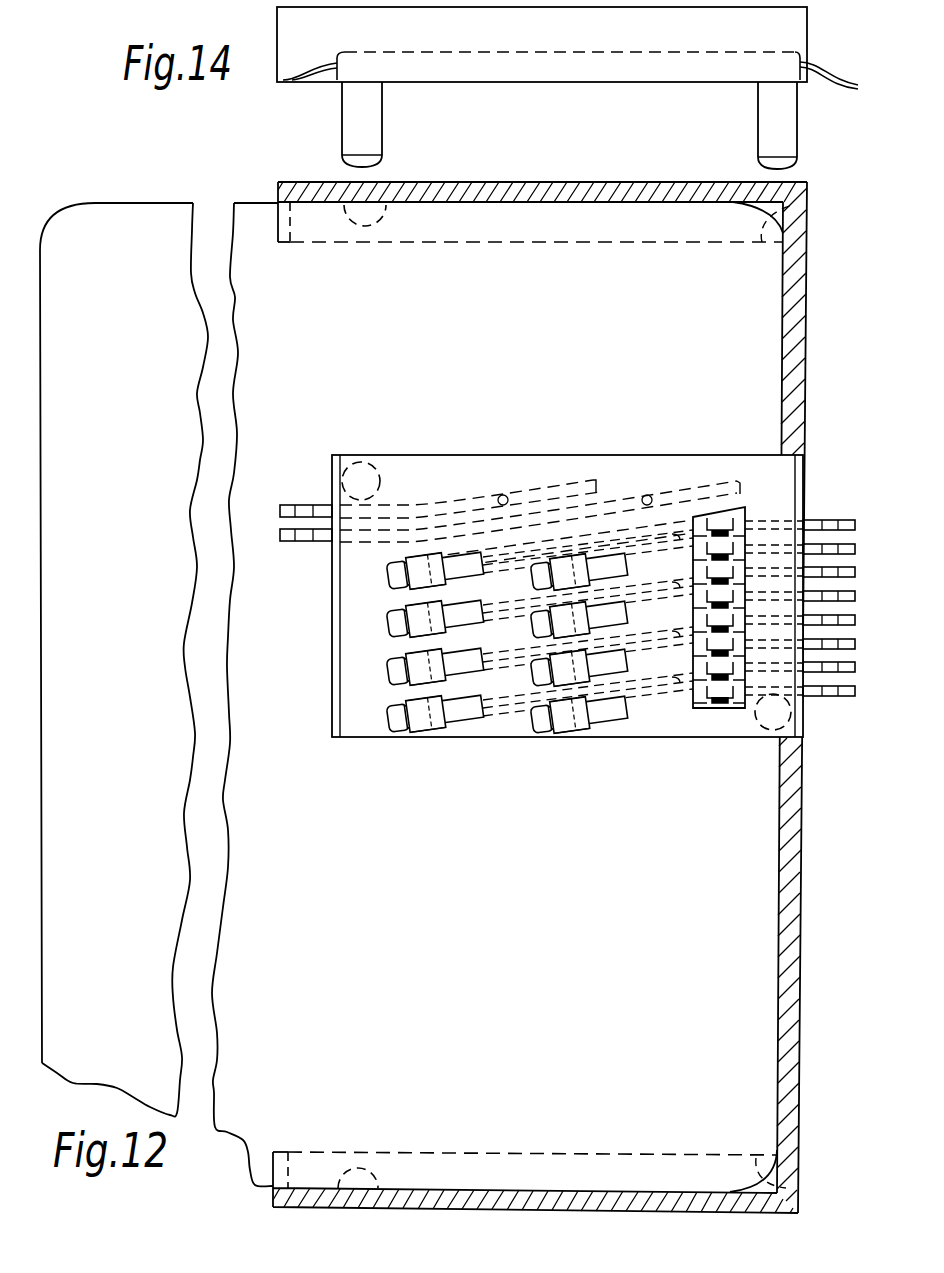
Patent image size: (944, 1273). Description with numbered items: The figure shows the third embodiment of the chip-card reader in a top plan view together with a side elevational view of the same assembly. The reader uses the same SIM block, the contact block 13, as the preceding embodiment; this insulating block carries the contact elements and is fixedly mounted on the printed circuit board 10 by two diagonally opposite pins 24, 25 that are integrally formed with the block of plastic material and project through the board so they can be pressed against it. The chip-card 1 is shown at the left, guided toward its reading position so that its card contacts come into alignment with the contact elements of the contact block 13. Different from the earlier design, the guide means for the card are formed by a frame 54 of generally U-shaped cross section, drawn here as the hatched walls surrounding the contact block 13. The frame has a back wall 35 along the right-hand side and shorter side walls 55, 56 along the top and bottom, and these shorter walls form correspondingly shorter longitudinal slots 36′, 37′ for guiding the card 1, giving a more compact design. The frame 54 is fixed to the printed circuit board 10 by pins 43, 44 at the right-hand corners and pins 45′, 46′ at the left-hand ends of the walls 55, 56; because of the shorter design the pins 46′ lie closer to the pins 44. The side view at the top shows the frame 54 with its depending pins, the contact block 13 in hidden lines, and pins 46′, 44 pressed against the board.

In FIG. 12, the chip-card 1 is at (113, 235).
In FIG. 14, the printed circuit board 10 is at (503, 41).
In FIG. 14, the contact block 13 is at (633, 72).
In FIG. 12, the contact block 13 is at (471, 484).
In FIG. 12, the pin 24 is at (369, 463).
In FIG. 12, the pin 25 is at (768, 738).
In FIG. 12, the back wall 35 is at (797, 393).
In FIG. 12, the longitudinal slot 36′ is at (478, 206).
In FIG. 12, the longitudinal slot 37′ is at (592, 1190).
In FIG. 14, the pin 43 is at (854, 11).
In FIG. 12, the pin 43 is at (762, 238).
In FIG. 14, the pin 44 is at (773, 123).
In FIG. 12, the pin 44 is at (762, 1168).
In FIG. 12, the pin 45′ is at (364, 232).
In FIG. 14, the pin 46′ is at (364, 140).
In FIG. 12, the pin 46′ is at (362, 1152).
In FIG. 14, the frame 54 is at (568, 82).
In FIG. 12, the frame 54 is at (577, 672).
In FIG. 12, the top wall 55 is at (461, 198).
In FIG. 12, the side wall 56 is at (496, 1190).